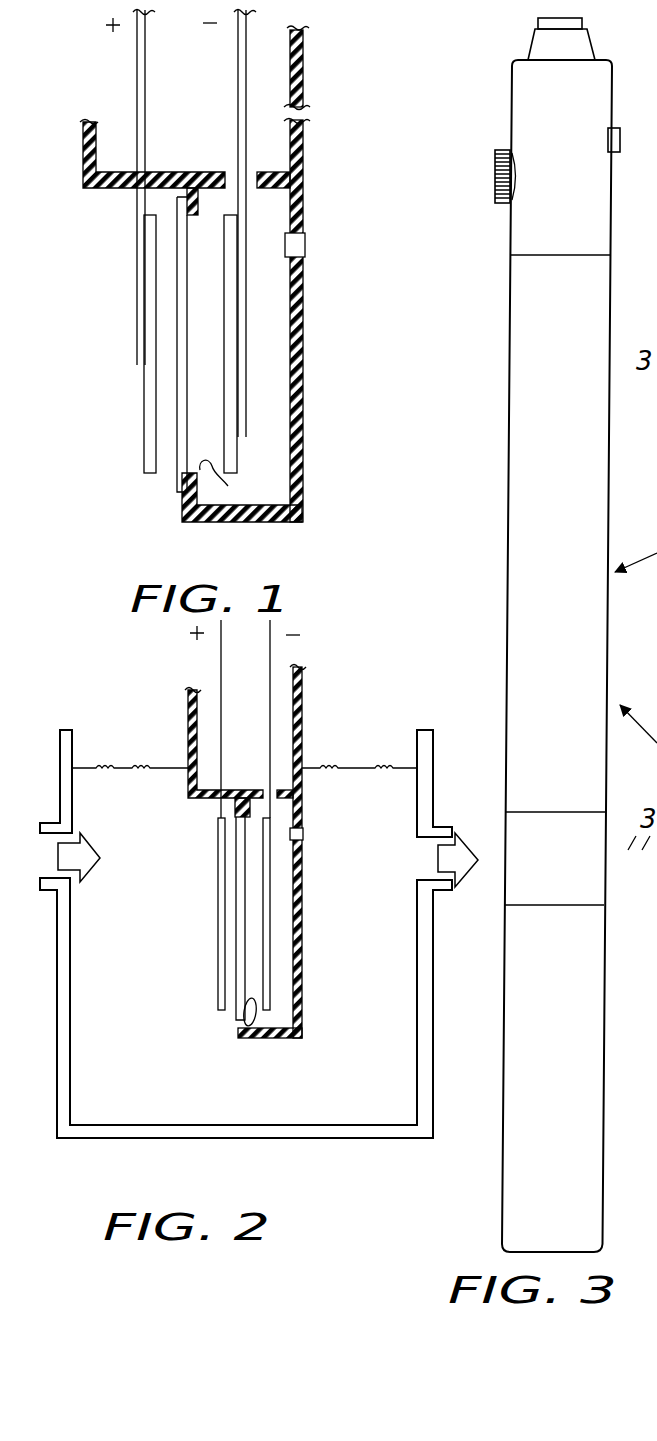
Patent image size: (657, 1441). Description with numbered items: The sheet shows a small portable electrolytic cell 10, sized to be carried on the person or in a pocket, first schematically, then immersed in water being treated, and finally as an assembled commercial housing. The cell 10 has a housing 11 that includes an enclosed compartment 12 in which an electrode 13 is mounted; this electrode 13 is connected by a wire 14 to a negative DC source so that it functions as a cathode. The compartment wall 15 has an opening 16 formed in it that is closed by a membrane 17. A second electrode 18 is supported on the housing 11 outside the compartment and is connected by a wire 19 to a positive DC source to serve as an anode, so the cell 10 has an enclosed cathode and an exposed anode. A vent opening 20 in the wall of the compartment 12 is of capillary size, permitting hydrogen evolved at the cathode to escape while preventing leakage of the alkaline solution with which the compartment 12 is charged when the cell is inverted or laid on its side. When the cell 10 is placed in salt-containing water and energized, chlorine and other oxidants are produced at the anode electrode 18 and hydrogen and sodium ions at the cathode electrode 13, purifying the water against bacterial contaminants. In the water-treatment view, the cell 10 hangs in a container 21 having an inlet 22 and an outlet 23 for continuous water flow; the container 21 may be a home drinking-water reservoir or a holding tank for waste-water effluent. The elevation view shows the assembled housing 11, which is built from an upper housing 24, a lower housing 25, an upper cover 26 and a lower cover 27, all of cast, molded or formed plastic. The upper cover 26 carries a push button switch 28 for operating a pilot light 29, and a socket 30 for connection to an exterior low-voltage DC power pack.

In FIG. 1, the electrolytic cell 10 is at (318, 387).
In FIG. 2, the electrolytic cell 10 is at (315, 931).
In FIG. 1, the housing 11 is at (84, 128).
In FIG. 2, the housing 11 is at (188, 740).
In FIG. 1, the enclosed compartment 12 is at (300, 290).
In FIG. 2, the enclosed compartment 12 is at (304, 902).
In FIG. 1, the electrode 13 is at (230, 440).
In FIG. 2, the electrode 13 is at (268, 1003).
In FIG. 1, the wire 14 is at (238, 70).
In FIG. 2, the wire 14 is at (272, 662).
In FIG. 1, the compartment wall 15 is at (182, 505).
In FIG. 2, the compartment wall 15 is at (238, 1032).
In FIG. 1, the opening 16 is at (230, 483).
In FIG. 2, the opening 16 is at (250, 1027).
In FIG. 1, the membrane 17 is at (181, 352).
In FIG. 2, the membrane 17 is at (236, 956).
In FIG. 1, the electrode 18 is at (144, 416).
In FIG. 2, the electrode 18 is at (218, 918).
In FIG. 1, the wire 19 is at (137, 70).
In FIG. 2, the wire 19 is at (220, 663).
In FIG. 1, the vent opening 20 is at (305, 243).
In FIG. 2, the vent opening 20 is at (304, 833).
In FIG. 2, the container 21 is at (238, 1128).
In FIG. 2, the inlet 22 is at (45, 826).
In FIG. 2, the outlet 23 is at (440, 892).
In FIG. 3, the upper housing 24 is at (520, 575).
In FIG. 3, the lower housing 25 is at (523, 852).
In FIG. 3, the upper cover 26 is at (522, 97).
In FIG. 3, the lower cover 27 is at (515, 1198).
In FIG. 3, the push button switch 28 is at (538, 22).
In FIG. 3, the pilot light 29 is at (622, 142).
In FIG. 3, the socket 30 is at (495, 160).